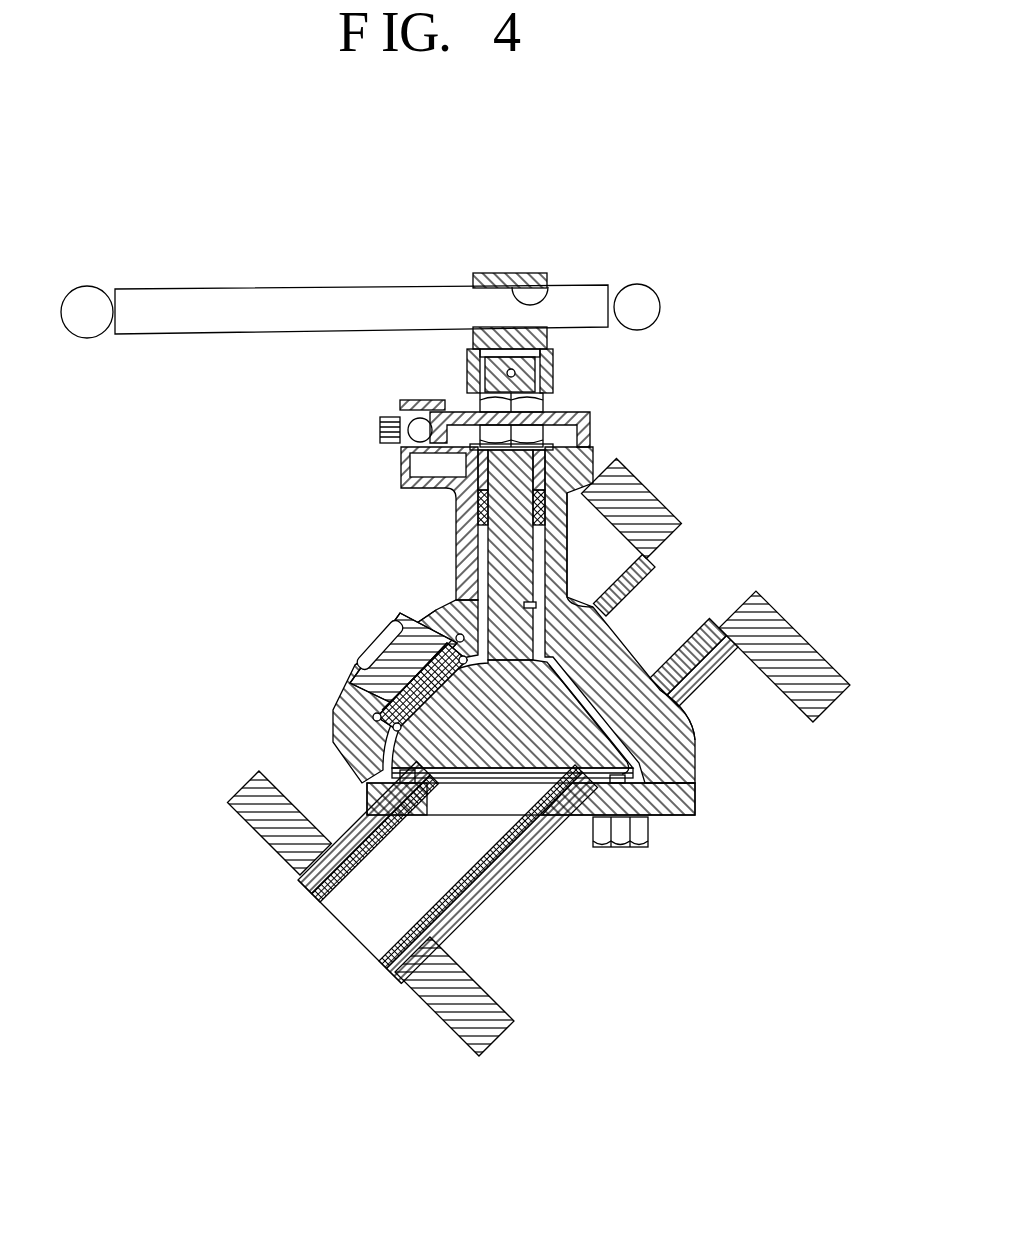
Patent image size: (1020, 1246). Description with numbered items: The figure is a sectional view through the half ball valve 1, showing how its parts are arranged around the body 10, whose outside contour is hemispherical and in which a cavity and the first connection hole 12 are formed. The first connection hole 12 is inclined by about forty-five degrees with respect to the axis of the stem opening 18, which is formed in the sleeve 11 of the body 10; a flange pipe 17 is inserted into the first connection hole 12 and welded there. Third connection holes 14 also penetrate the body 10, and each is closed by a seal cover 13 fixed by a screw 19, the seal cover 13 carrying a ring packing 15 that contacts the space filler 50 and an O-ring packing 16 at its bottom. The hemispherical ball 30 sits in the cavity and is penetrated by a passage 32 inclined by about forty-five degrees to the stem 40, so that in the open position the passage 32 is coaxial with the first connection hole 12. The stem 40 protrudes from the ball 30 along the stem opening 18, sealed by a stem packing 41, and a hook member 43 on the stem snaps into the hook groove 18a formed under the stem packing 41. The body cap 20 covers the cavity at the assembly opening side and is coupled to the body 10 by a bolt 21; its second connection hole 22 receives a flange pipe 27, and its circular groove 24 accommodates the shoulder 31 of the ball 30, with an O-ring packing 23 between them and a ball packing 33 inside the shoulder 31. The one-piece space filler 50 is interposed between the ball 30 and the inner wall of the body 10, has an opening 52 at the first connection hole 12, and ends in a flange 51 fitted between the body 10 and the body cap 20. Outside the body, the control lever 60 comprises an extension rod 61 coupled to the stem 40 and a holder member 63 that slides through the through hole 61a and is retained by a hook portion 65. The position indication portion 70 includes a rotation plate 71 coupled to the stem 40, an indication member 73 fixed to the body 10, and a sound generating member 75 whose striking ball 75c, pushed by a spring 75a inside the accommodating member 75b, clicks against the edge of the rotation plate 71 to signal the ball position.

The half ball valve 1 is at (196, 238).
The body 10 is at (330, 725).
The sleeve 11 is at (455, 508).
The first connection hole 12 is at (622, 672).
The seal cover 13 is at (405, 628).
The third connection holes 14 is at (455, 630).
The ring packing 15 is at (378, 645).
The O-ring packing 16 is at (395, 695).
The flange pipe 17 is at (760, 595).
The stem opening 18 is at (470, 545).
The hook groove 18a is at (558, 600).
The screw 19 is at (372, 632).
The body cap 20 is at (580, 822).
The bolt 21 is at (630, 850).
The second connection hole 22 is at (472, 876).
The O-ring packing 23 is at (398, 775).
The groove 24 is at (332, 832).
The flange pipe 27 is at (442, 1015).
The ball 30 is at (365, 660).
The shoulder 31 is at (380, 790).
The passage 32 is at (662, 806).
The ball packing 33 is at (603, 830).
The stem 40 is at (506, 567).
The stem packing 41 is at (552, 470).
The hook member 43 is at (625, 500).
The space filler 50 is at (642, 751).
The flange 51 is at (698, 790).
The opening 52 is at (678, 702).
The control lever 60 is at (537, 165).
The extension rod 61 is at (520, 272).
The through hole 61a is at (545, 290).
The holder member 63 is at (598, 288).
The hook portion 65 is at (640, 300).
The position indication portion 70 is at (212, 352).
The rotation plate 71 is at (458, 410).
The indication member 73 is at (435, 418).
The sound generating member 75 is at (288, 400).
The spring 75a is at (380, 430).
The accommodating member 75b is at (398, 406).
The striking ball 75c is at (400, 446).